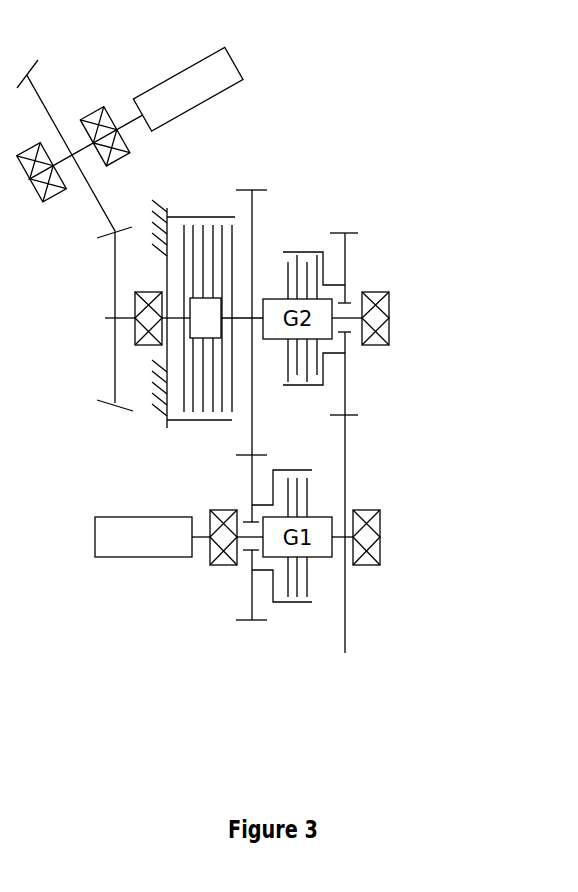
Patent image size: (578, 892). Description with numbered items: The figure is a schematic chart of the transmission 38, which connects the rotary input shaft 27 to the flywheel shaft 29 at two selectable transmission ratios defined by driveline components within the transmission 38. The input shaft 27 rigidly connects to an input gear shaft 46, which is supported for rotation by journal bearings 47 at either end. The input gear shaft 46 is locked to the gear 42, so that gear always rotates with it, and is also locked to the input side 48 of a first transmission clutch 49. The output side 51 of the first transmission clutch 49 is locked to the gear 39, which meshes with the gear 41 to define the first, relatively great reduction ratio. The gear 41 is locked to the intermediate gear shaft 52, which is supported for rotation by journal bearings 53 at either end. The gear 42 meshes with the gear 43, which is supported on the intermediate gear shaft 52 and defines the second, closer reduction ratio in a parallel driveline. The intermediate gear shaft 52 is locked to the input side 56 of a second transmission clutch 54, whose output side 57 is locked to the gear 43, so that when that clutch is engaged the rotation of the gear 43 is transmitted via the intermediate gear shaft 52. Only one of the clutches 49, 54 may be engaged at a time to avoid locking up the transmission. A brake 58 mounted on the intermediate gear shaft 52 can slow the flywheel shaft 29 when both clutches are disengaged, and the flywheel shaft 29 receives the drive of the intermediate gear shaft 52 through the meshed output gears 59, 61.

The rotary input shaft 27 is at (101, 539).
The flywheel shaft 29 is at (235, 62).
The transmission 38 is at (505, 248).
The gear 39 is at (247, 598).
The gear 41 is at (253, 215).
The gear 42 is at (347, 585).
The gear 43 is at (347, 398).
The input gear shaft 46 is at (208, 537).
The journal bearings 47 is at (222, 567).
The input side of first transmission clutch 48 is at (310, 490).
The first transmission clutch 49 is at (288, 605).
The output side of first transmission clutch 51 is at (285, 470).
The intermediate gear shaft 52 is at (352, 316).
The journal bearings 53 is at (135, 328).
The second transmission clutch 54 is at (308, 252).
The input side of second transmission clutch 56 is at (288, 278).
The output side of second transmission clutch 57 is at (323, 382).
The brake 58 is at (195, 217).
The output gear 59 is at (115, 392).
The output gear 61 is at (45, 102).